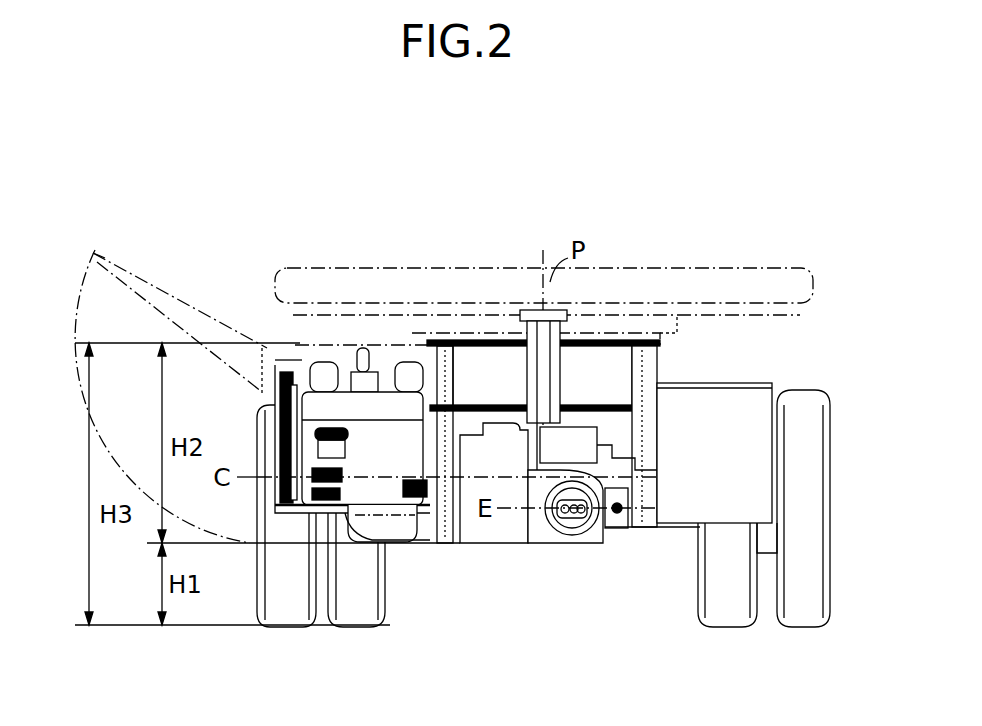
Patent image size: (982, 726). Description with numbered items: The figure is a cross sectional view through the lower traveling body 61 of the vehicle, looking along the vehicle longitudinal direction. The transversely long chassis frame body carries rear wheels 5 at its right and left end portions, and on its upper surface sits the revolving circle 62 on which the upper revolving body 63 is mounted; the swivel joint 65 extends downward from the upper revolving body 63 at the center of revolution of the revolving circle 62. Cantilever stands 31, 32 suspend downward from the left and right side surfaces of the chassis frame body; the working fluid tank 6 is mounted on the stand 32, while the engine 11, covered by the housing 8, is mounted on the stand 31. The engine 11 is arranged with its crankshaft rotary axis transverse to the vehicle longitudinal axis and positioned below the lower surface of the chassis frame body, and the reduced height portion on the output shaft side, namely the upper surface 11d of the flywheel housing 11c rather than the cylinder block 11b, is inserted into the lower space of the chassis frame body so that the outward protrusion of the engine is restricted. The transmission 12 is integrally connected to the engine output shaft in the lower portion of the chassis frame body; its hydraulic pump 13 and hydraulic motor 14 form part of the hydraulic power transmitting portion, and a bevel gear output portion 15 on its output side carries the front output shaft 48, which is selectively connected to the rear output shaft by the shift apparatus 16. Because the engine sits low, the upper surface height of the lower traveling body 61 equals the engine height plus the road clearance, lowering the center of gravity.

The rear wheel 5 is at (812, 467).
The working fluid tank 6 is at (743, 395).
The housing 8 is at (290, 347).
The engine 11 is at (360, 446).
The cylinder block 11b is at (367, 450).
The flywheel housing 11c is at (435, 527).
The upper surface of flywheel housing 11d is at (427, 430).
The transmission 12 is at (493, 537).
The hydraulic pump 13 is at (607, 463).
The hydraulic motor 14 is at (587, 437).
The bevel gear output portion 15 is at (552, 538).
The shift apparatus 16 is at (622, 530).
The cantilever stand 31 is at (443, 530).
The cantilever stand 32 is at (652, 530).
The front output shaft 48 is at (570, 513).
The lower traveling body 61 is at (717, 657).
The revolving circle 62 is at (610, 322).
The upper revolving body 63 is at (722, 278).
The swivel joint 65 is at (535, 387).